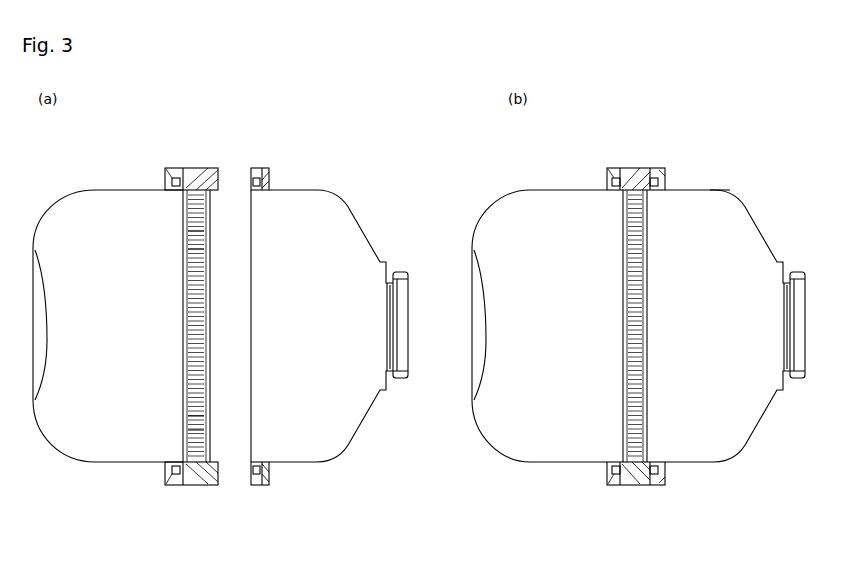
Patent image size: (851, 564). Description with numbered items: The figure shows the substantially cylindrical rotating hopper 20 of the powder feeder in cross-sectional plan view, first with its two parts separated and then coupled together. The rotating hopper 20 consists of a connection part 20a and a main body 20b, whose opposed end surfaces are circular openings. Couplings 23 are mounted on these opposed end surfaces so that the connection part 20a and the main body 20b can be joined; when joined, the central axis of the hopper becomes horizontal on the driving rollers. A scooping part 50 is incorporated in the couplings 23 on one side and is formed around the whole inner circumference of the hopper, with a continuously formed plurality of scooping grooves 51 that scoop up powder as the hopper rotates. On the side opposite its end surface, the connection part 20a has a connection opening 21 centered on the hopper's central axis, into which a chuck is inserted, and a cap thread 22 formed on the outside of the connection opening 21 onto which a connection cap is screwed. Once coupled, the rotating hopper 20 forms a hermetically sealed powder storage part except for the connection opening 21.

The rotating hopper 20 is at (733, 161).
The connection part 20a is at (360, 170).
The main body 20b is at (93, 190).
The connection opening 21 is at (405, 374).
The cap thread 22 is at (418, 249).
The coupling 23 is at (262, 178).
The scooping part 50 is at (178, 421).
The scooping groove 51 is at (190, 249).